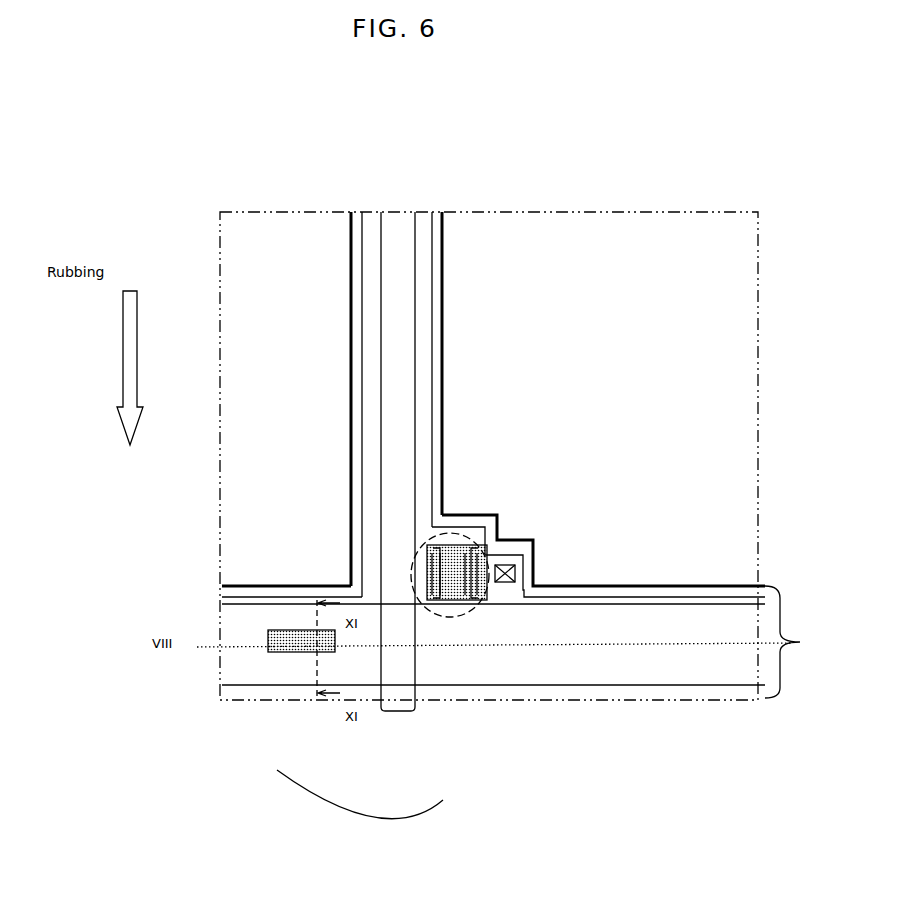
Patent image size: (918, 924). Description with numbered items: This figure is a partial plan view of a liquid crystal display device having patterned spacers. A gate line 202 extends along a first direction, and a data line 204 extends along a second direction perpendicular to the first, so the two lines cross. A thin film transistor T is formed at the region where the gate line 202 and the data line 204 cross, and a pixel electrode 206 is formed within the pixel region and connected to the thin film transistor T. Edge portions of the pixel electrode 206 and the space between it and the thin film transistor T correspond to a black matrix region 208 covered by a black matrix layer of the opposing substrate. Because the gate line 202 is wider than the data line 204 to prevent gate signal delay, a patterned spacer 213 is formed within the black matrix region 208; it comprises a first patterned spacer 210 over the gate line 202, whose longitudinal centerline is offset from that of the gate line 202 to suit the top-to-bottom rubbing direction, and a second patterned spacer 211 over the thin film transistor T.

The gate line 202 is at (575, 663).
The data line 204 is at (416, 710).
The pixel electrode 206 is at (262, 226).
The black matrix region 208 is at (440, 207).
The first patterned spacer 210 is at (297, 652).
The second patterned spacer 211 is at (452, 600).
The patterned spacer 213 is at (360, 803).
The thin film transistor T is at (472, 546).